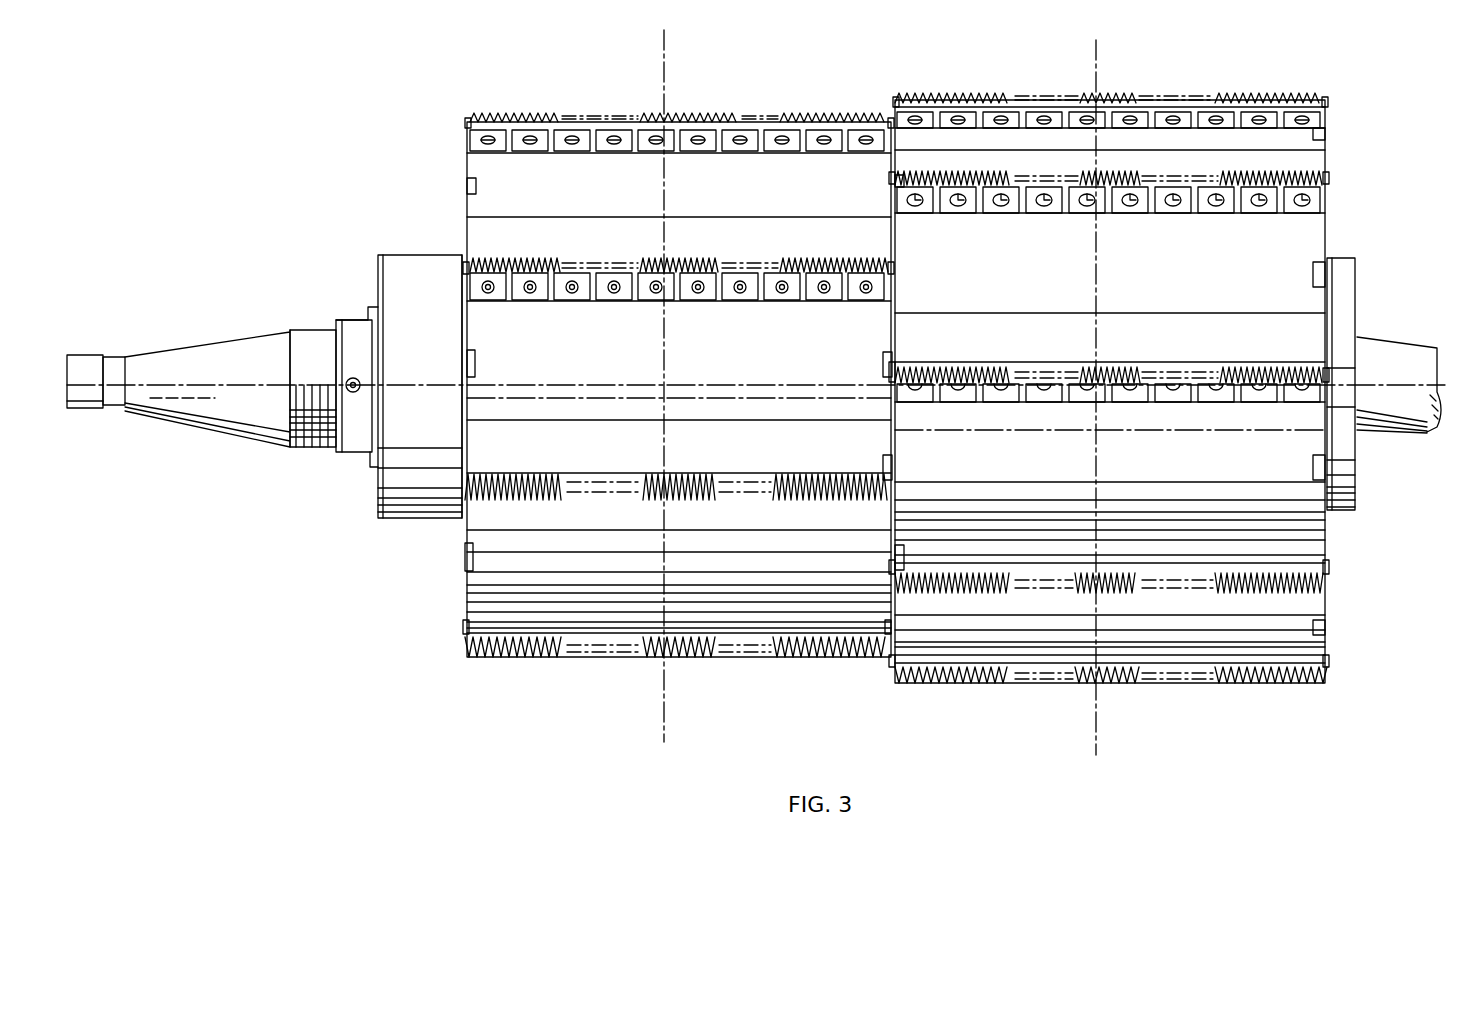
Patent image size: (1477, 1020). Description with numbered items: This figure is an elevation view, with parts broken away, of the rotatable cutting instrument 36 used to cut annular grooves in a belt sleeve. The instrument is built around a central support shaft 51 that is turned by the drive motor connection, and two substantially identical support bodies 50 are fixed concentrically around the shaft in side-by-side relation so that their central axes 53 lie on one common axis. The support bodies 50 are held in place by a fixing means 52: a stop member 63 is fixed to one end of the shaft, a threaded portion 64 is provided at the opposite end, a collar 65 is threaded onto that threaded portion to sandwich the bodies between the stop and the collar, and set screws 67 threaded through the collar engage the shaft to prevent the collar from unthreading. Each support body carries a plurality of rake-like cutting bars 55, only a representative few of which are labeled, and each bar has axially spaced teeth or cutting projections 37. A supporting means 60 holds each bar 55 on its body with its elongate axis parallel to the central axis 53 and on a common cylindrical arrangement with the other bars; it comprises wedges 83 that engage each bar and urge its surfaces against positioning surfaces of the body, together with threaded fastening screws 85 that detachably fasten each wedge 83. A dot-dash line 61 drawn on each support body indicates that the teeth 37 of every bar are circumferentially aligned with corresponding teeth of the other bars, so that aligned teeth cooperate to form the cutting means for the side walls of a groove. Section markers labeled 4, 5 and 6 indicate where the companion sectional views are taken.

The rotatable cutting instrument 36 is at (503, 86).
The cutting projections 37 is at (790, 110).
The support bodies 50 is at (488, 200).
The central support shaft 51 is at (240, 335).
The fixing means 52 is at (323, 472).
The central axis 53 is at (570, 385).
The rake-like cutting bars 55 is at (467, 123).
The supporting means 60 is at (652, 150).
The dot-dash line 61 is at (665, 440).
The stop member 63 is at (1350, 290).
The threaded portion 64 is at (300, 415).
The collar 65 is at (420, 500).
The set screws 67 is at (352, 376).
The wedges 83 is at (836, 150).
The threaded fastening screws 85 is at (612, 300).
The section line 4 is at (80, 400).
The section line 5 is at (1355, 43).
The section line 6 is at (845, 232).